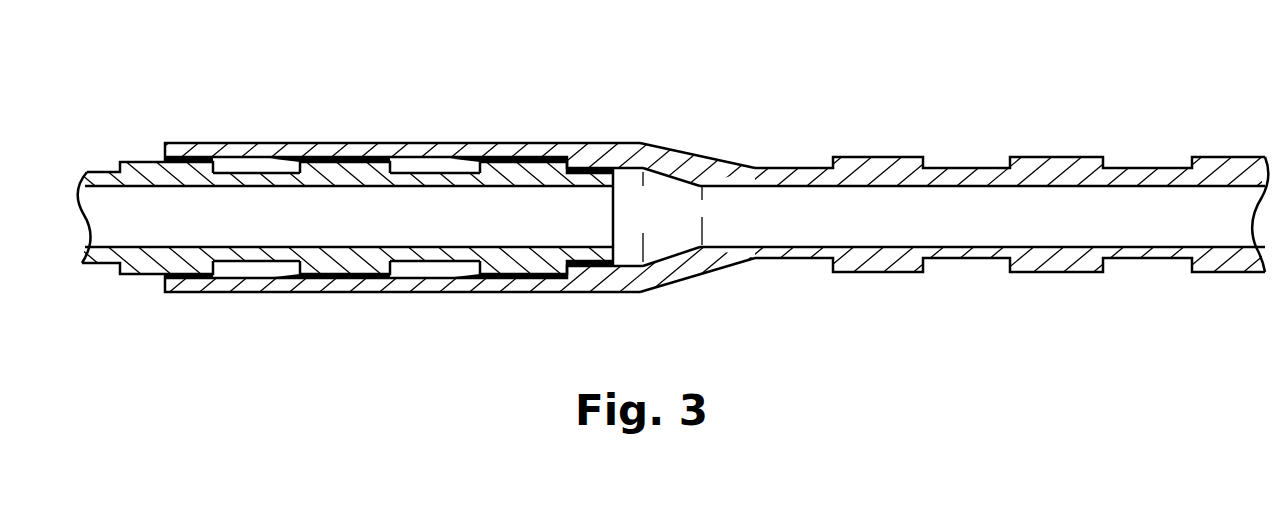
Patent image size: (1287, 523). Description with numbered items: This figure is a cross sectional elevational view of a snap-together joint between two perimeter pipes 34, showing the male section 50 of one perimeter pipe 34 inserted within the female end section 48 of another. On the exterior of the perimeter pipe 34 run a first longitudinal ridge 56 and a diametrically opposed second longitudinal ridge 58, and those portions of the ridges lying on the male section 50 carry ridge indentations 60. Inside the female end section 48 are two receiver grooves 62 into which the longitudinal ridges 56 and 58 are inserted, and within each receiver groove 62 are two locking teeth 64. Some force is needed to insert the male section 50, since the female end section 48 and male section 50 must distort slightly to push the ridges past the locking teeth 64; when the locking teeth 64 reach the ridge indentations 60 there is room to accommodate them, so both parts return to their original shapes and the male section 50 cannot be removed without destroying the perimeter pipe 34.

The perimeter pipe 34 is at (643, 198).
The female end section 48 is at (673, 157).
The male section 50 is at (131, 268).
The first longitudinal ridge 56 is at (355, 143).
The second longitudinal ridge 58 is at (345, 293).
The ridge indentations 60 is at (422, 293).
The receiver grooves 62 is at (550, 289).
The locking teeth 64 is at (462, 282).